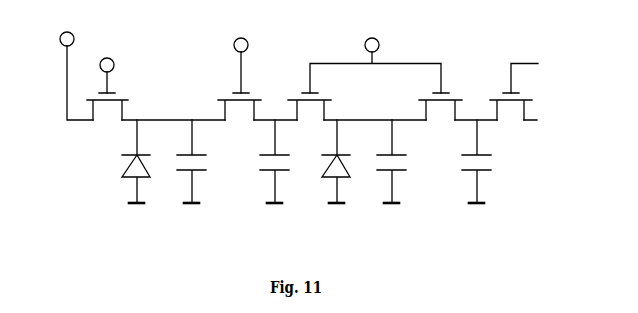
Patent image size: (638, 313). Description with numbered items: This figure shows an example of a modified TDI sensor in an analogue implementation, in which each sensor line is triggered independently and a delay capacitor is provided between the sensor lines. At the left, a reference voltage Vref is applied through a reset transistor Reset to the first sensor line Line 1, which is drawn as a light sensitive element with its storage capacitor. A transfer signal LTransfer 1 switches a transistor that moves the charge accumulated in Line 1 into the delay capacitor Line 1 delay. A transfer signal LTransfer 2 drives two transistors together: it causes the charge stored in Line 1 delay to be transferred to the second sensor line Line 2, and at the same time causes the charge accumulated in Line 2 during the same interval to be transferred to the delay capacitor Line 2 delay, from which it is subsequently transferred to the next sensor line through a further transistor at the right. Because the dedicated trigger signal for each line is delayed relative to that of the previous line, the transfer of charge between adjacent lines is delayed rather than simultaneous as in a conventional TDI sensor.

The reference voltage input Vref is at (89, 74).
The reset transistor Reset is at (125, 88).
The line 1 transfer signal LTransfer 1 is at (267, 77).
The line 2 transfer signal LTransfer 2 is at (375, 77).
The sensor line 1 Line 1 is at (114, 223).
The line 1 delay capacitor Line 1 delay is at (315, 223).
The sensor line 2 Line 2 is at (413, 223).
The line 2 delay capacitor Line 2 delay is at (517, 223).